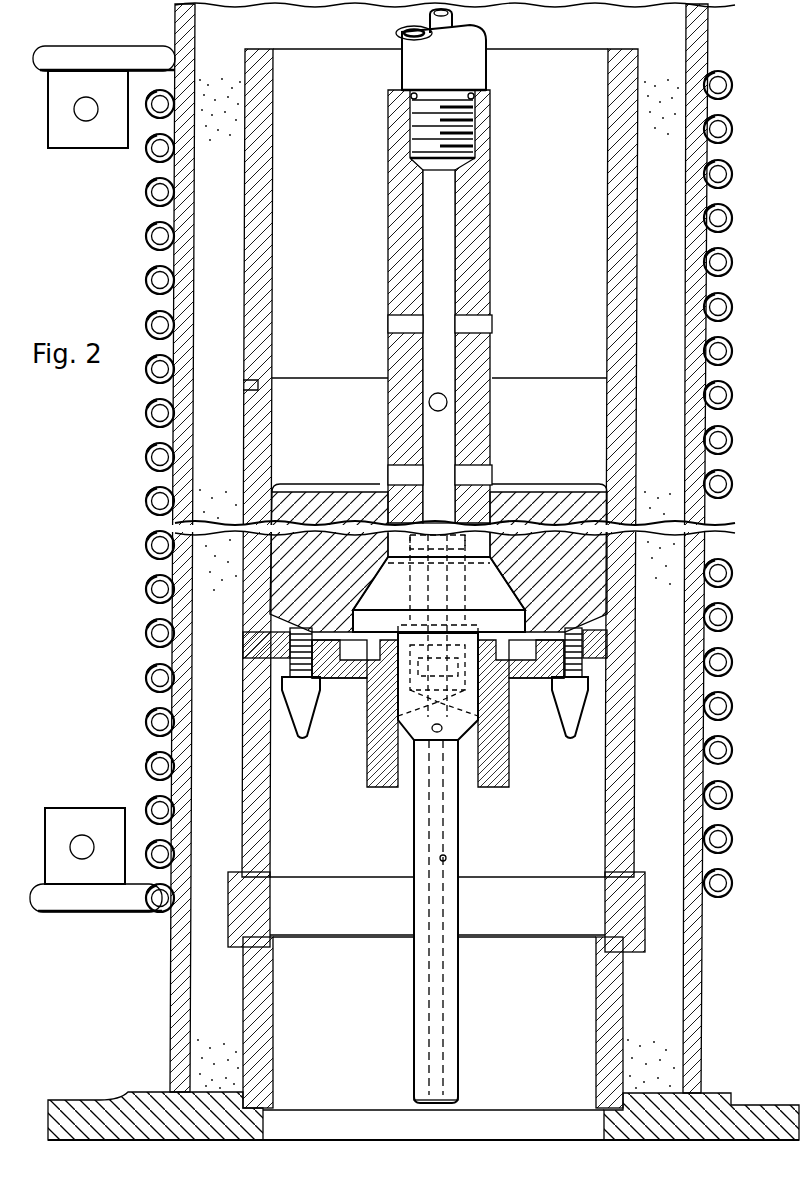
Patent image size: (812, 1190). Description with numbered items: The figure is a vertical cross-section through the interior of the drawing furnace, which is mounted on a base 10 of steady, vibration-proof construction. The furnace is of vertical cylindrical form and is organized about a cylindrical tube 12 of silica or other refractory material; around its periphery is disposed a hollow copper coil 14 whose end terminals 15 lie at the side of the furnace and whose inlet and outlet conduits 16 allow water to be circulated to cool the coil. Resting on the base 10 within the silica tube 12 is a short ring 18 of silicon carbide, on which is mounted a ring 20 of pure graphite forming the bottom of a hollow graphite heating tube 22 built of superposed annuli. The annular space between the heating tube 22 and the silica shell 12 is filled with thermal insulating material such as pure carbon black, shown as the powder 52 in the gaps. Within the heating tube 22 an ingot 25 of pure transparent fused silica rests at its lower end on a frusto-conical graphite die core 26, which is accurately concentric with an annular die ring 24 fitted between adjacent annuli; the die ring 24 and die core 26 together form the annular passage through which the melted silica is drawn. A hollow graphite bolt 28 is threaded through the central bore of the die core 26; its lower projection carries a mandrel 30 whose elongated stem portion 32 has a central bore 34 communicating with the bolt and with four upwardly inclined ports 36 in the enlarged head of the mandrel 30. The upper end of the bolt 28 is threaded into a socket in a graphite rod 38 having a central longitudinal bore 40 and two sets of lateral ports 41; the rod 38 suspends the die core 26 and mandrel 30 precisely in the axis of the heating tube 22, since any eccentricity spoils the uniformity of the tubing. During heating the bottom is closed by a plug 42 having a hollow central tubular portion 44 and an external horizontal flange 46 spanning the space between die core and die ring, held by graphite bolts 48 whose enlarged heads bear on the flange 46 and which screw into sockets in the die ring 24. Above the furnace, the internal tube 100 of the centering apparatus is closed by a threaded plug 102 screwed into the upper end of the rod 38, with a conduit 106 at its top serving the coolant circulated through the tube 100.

The base 10 is at (102, 1100).
The cylindrical tube 12 is at (176, 944).
The hollow copper coil 14 is at (733, 572).
The end terminals 15 is at (112, 146).
The inlet and outlet conduits 16 is at (90, 52).
The short ring 18 is at (270, 1032).
The ring 20 is at (232, 912).
The heating tube 22 is at (242, 814).
The die ring 24 is at (572, 630).
The ingot 25 is at (324, 593).
The die core 26 is at (520, 616).
The hollow graphite bolt 28 is at (468, 596).
The mandrel 30 is at (460, 806).
The stem portion 32 is at (458, 839).
The central bore 34 is at (447, 858).
The upwardly inclined ports 36 is at (398, 703).
The graphite rod 38 is at (485, 281).
The central longitudinal bore 40 is at (447, 235).
The lateral ports 41 is at (488, 323).
The plug 42 is at (515, 684).
The hollow central tubular portion 44 is at (503, 735).
The external horizontal flange 46 is at (330, 678).
The graphite bolts 48 is at (315, 724).
The insulating powder 52 is at (210, 1060).
The internal tube 100 is at (485, 74).
The threaded plug 102 is at (484, 132).
The inlet pipe 106 is at (422, 16).